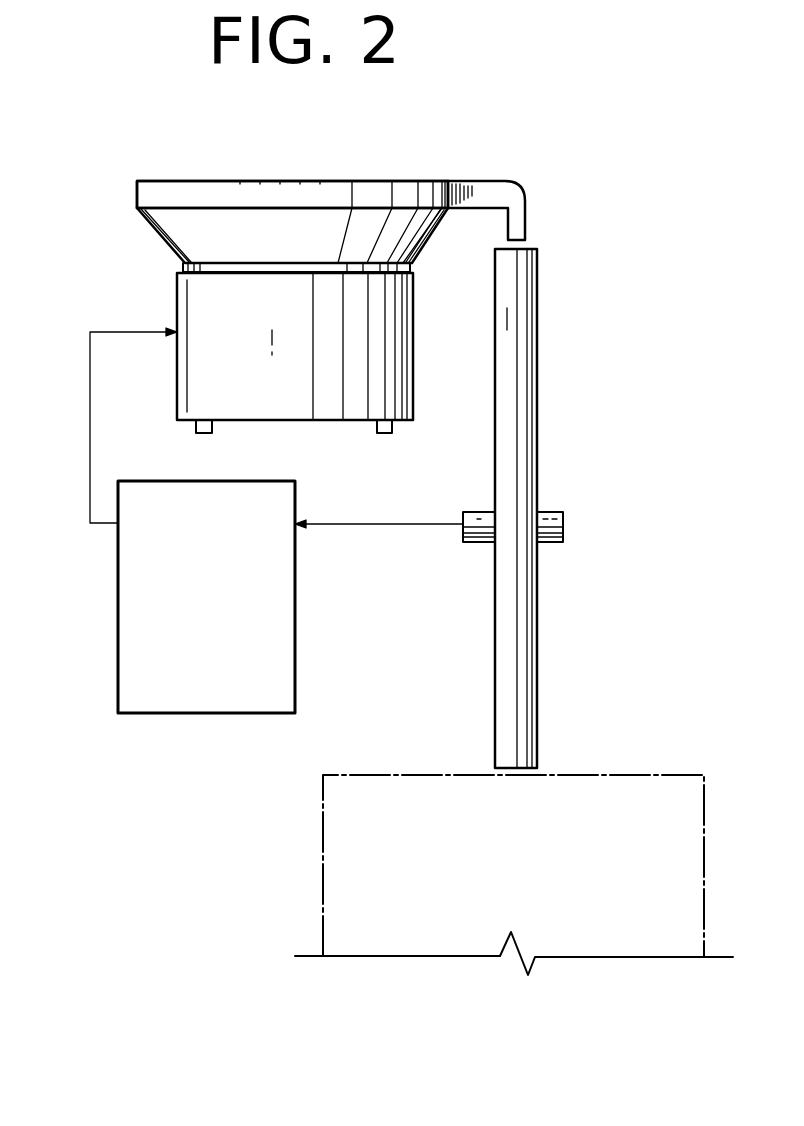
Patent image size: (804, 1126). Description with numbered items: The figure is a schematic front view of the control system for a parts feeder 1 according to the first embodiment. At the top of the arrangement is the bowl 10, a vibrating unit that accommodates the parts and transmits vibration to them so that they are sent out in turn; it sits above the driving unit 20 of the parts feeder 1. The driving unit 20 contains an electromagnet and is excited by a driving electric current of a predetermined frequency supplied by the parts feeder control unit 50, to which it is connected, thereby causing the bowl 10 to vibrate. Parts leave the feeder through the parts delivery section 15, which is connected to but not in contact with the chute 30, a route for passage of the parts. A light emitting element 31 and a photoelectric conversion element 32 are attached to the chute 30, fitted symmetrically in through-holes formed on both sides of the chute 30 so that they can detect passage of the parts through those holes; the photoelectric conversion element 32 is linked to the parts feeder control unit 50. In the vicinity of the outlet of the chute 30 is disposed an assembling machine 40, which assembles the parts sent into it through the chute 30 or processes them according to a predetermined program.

The parts feeder 1 is at (413, 163).
The bowl 10 is at (137, 196).
The parts delivery section 15 is at (527, 204).
The driving unit 20 is at (177, 303).
The chute 30 is at (527, 425).
The light emitting element 31 is at (563, 525).
The photoelectric conversion element 32 is at (470, 512).
The assembling machine 40 is at (330, 837).
The parts feeder control unit 50 is at (118, 673).